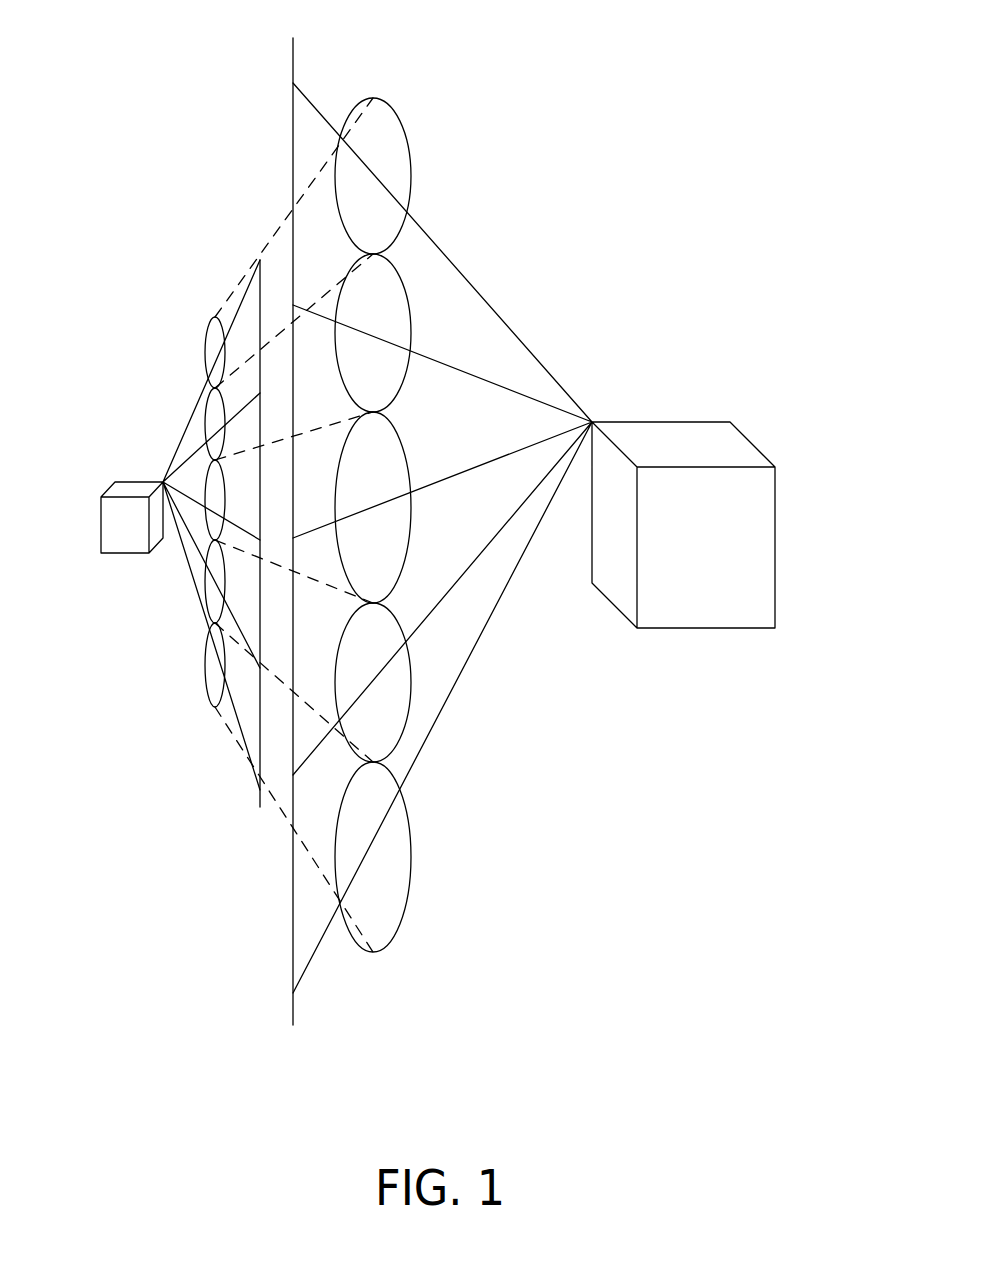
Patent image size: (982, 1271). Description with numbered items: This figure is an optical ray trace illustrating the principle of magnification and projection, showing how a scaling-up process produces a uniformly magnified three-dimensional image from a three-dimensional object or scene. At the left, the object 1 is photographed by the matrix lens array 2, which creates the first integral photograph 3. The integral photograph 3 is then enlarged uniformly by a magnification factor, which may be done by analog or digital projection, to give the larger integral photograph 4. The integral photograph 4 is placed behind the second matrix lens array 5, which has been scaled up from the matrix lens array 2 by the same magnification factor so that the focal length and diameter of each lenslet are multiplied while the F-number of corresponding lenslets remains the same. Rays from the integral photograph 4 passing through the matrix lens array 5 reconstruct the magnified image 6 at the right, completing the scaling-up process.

The object 1 is at (96, 531).
The matrix lens array 2 is at (192, 689).
The integral photograph 3 is at (238, 779).
The integral photograph 4 is at (260, 953).
The matrix lens array 5 is at (424, 939).
The magnified image 6 is at (786, 587).